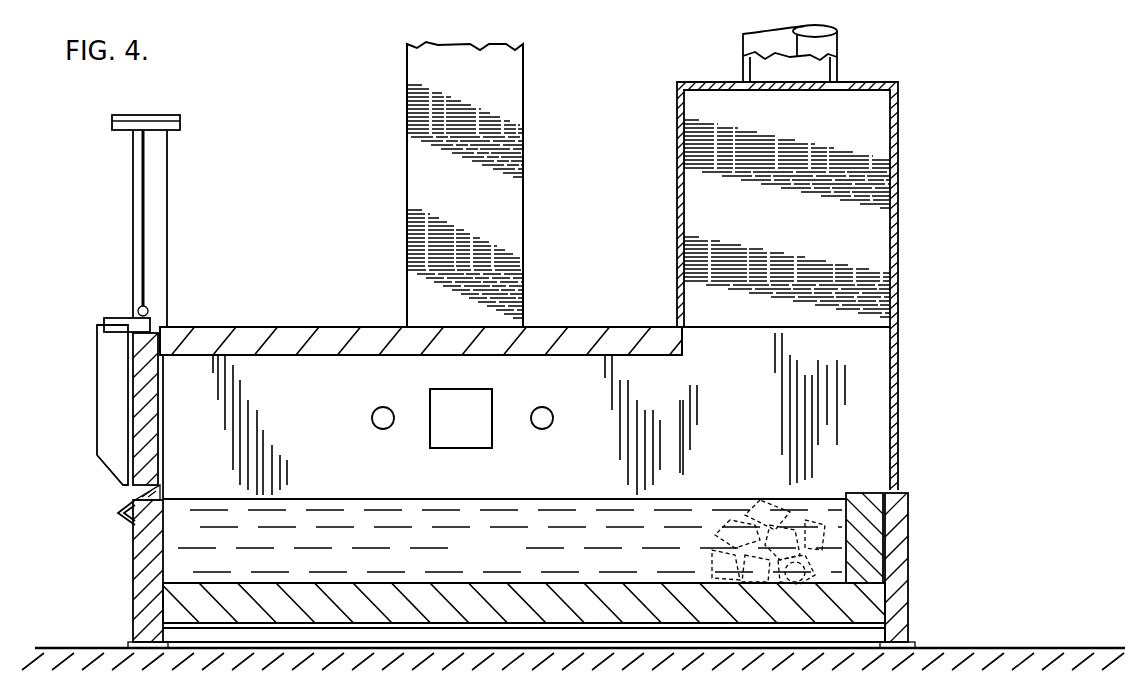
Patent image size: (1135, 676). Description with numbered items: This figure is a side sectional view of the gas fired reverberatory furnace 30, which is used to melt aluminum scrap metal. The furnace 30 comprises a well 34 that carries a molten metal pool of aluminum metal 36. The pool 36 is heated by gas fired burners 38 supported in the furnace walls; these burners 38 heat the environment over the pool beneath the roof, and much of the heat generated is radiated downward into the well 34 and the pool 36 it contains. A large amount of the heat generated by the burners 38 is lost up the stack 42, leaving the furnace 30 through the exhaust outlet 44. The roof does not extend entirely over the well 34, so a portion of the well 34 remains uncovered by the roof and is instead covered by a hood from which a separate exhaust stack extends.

The reverberatory furnace 30 is at (918, 322).
The well 34 is at (857, 567).
The molten metal pool 36 is at (514, 557).
The gas fired burners 38 is at (373, 424).
The stack 42 is at (523, 146).
The exhaust outlet 44 is at (473, 432).